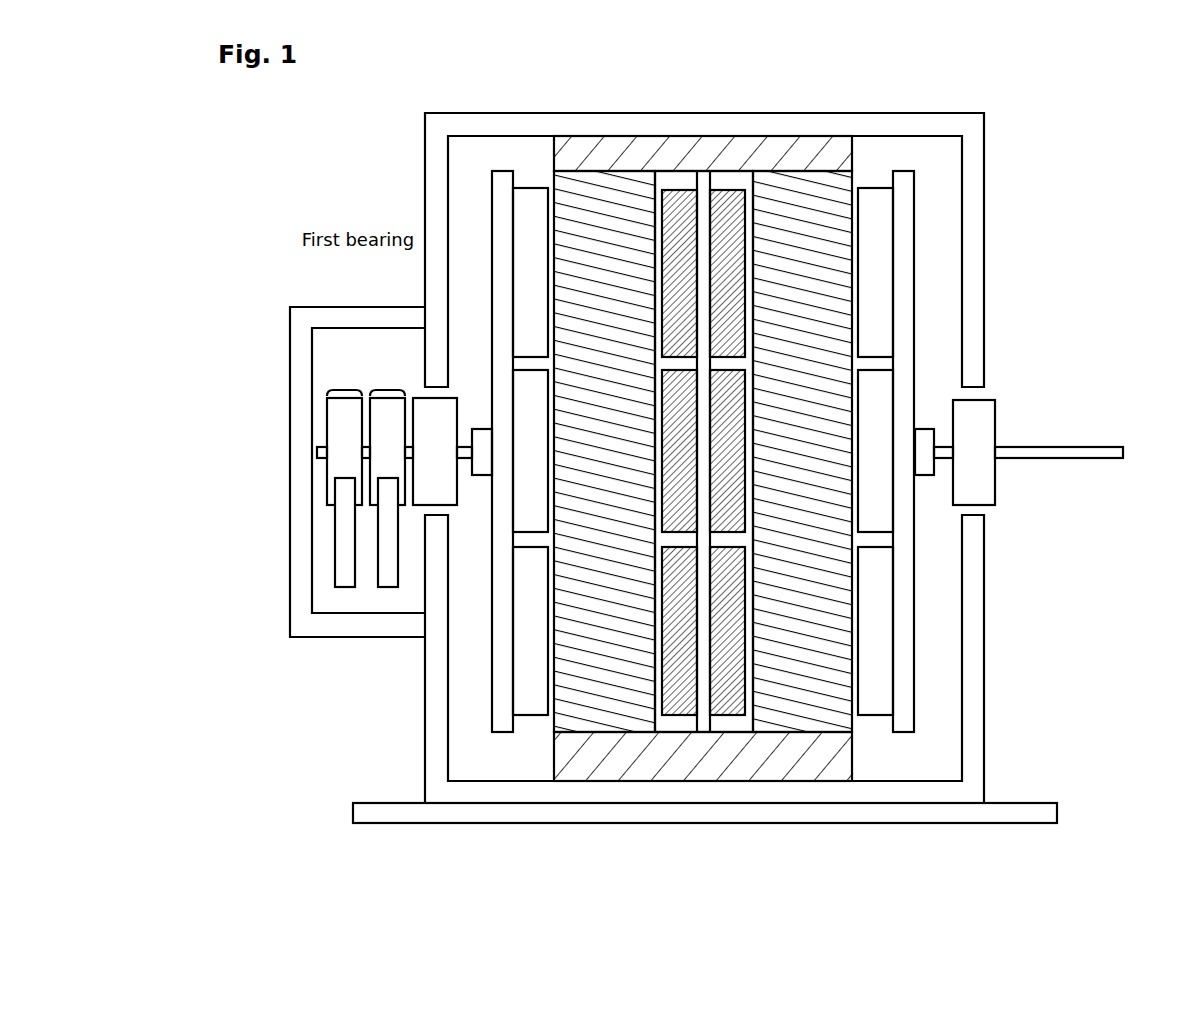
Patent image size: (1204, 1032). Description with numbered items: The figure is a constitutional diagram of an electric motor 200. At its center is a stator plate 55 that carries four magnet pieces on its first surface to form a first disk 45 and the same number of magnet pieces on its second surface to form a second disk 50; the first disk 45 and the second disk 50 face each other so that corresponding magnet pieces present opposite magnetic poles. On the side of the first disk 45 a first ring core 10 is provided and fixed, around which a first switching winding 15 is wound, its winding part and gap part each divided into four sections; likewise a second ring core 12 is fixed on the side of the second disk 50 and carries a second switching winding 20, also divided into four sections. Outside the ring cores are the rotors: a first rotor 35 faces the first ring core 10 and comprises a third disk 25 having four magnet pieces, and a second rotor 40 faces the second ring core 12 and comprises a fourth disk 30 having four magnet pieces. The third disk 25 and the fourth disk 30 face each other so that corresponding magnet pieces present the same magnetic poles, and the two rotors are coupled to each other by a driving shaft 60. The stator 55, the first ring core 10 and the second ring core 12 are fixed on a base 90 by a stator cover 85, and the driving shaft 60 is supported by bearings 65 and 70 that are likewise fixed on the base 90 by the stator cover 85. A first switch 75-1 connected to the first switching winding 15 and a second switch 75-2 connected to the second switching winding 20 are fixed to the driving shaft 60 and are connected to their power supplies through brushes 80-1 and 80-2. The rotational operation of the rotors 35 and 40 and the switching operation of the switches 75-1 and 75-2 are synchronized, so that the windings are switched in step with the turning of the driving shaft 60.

The first ring core 10 is at (597, 182).
The second ring core 12 is at (783, 182).
The first switching winding 15 is at (565, 197).
The second switching winding 20 is at (815, 203).
The third disk 25 is at (530, 713).
The fourth disk 30 is at (877, 716).
The first rotor 35 is at (503, 638).
The second rotor 40 is at (905, 650).
The first disk 45 is at (672, 715).
The second disk 50 is at (730, 715).
The stator plate 55 is at (702, 183).
The driving shaft 60 is at (1088, 461).
The bearing 65 is at (423, 398).
The bearing 70 is at (997, 402).
The first switch 75-1 is at (345, 389).
The second switch 75-2 is at (385, 389).
The brush 80-1 is at (350, 588).
The brush 80-2 is at (392, 588).
The stator cover 85 is at (958, 113).
The base 90 is at (378, 824).
The electric motor 200 is at (681, 910).